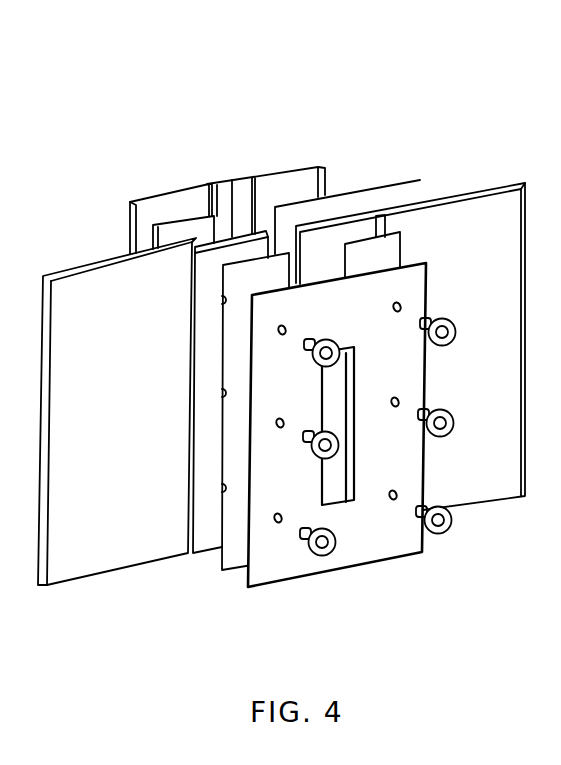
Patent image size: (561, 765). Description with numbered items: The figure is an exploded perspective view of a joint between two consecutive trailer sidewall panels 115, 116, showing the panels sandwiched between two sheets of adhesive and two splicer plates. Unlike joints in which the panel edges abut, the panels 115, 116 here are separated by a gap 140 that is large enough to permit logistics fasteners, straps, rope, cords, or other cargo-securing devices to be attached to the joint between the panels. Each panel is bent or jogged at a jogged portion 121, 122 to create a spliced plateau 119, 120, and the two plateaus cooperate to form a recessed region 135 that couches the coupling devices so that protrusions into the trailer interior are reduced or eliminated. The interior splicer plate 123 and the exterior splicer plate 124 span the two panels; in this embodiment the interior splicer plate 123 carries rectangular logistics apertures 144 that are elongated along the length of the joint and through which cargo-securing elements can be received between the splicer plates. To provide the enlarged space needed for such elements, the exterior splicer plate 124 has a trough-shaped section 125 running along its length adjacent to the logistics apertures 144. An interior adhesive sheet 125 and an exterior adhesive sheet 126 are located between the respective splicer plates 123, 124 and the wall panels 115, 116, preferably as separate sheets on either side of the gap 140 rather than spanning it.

The sidewall panel 115 is at (487, 493).
The sidewall panel 116 is at (127, 557).
The spliced plateau 119 is at (221, 124).
The spliced plateau 120 is at (215, 260).
The jogged portion 121 is at (382, 217).
The jogged portion 122 is at (193, 343).
The interior splicer plate 123 is at (290, 567).
The exterior splicer plate 124 is at (173, 202).
The interior adhesive sheet 125 is at (173, 232).
The exterior adhesive sheet 126 is at (231, 563).
The recessed region 135 is at (200, 456).
The gap 140 is at (288, 231).
The logistics aperture 144 is at (353, 500).